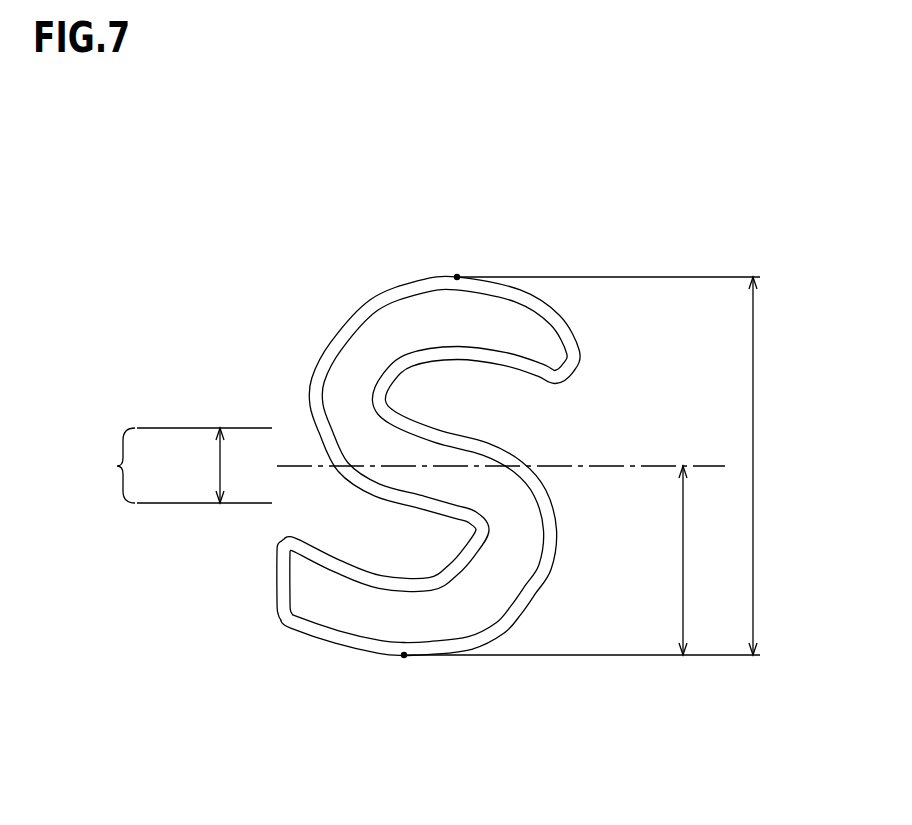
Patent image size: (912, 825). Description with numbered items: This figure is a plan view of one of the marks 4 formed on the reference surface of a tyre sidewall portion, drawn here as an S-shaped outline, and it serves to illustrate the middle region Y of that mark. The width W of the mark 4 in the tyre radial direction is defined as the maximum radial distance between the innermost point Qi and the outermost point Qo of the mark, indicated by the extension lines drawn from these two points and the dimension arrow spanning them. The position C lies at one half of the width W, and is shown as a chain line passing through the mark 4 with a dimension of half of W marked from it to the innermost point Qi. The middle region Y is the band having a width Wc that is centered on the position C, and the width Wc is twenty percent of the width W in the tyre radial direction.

The mark 4 is at (297, 297).
The outermost point Qo is at (457, 273).
The innermost point Qi is at (403, 660).
The center position C is at (632, 467).
The width in the tyre radial direction W is at (690, 562).
The width of the middle region Wc is at (204, 465).
The middle region Y is at (117, 465).